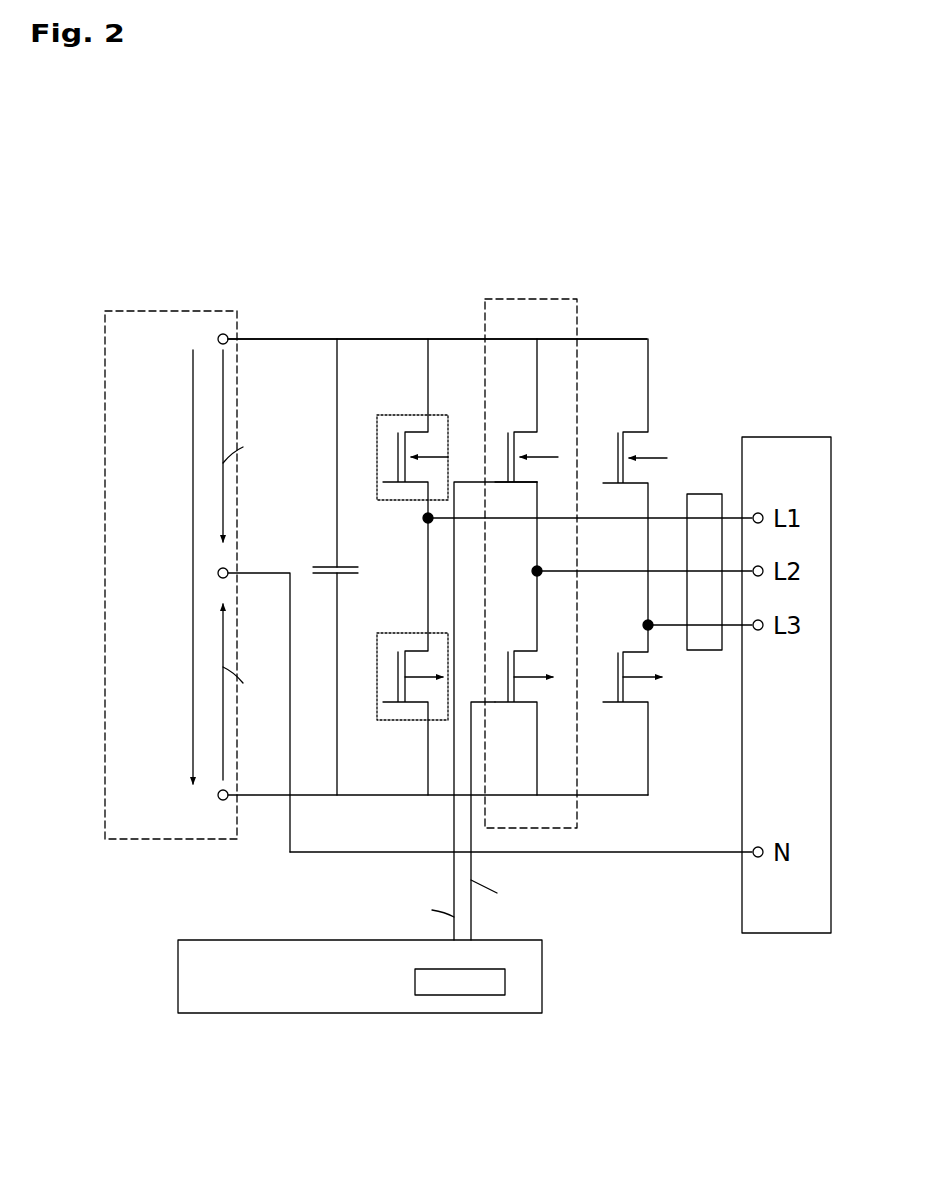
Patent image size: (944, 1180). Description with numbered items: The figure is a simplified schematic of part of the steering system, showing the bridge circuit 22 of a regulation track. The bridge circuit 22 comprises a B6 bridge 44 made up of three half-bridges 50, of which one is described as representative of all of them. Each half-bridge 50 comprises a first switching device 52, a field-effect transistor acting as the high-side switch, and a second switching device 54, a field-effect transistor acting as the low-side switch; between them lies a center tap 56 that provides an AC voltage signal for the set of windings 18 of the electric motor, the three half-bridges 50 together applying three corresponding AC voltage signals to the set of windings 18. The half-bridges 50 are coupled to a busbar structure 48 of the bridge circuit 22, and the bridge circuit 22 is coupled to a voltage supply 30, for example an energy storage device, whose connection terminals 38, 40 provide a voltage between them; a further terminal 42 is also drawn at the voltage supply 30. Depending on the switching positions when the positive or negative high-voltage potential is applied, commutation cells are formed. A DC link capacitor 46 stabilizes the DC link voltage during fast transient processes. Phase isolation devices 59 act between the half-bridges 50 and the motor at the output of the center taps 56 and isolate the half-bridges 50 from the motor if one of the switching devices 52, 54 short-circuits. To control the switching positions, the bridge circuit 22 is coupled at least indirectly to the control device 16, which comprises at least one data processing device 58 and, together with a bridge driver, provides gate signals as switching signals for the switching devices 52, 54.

The control device 16 is at (368, 748).
The set of windings 18 is at (783, 437).
The bridge circuit 22 is at (662, 258).
The voltage supply 30 is at (137, 311).
The connection terminal 38 is at (227, 334).
The connection terminal 40 is at (223, 801).
The center tap terminal 42 is at (228, 567).
The B6 bridge 44 is at (297, 339).
The DC link capacitor 46 is at (345, 565).
The busbar structure 48 is at (475, 338).
The half-bridge 50 is at (551, 522).
The first switching device 52 is at (528, 430).
The second switching device 54 is at (527, 651).
The center tap 56 is at (530, 566).
The data processing device 58 is at (505, 980).
The phase isolation device 59 is at (715, 650).